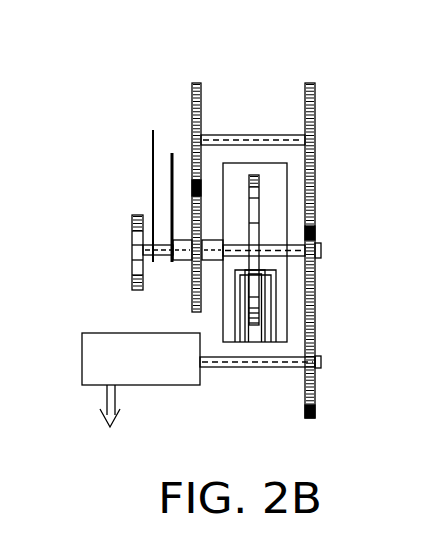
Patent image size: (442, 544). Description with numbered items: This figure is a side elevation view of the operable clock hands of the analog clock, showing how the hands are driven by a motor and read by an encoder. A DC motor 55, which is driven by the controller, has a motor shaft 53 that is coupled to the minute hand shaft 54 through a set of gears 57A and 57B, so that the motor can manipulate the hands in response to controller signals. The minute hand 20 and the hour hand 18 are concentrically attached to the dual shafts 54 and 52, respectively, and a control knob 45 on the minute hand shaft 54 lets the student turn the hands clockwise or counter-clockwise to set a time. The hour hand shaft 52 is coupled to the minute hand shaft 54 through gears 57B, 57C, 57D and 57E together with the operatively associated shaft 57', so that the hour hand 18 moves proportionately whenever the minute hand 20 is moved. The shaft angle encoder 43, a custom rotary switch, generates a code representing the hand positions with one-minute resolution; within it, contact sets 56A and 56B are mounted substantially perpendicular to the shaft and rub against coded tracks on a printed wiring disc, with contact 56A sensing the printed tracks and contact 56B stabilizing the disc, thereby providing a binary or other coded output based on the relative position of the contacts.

The hour hand 18 is at (172, 163).
The minute hand 20 is at (153, 155).
The encoder 43 is at (270, 163).
The control knob 45 is at (132, 250).
The hour hand shaft 52 is at (178, 263).
The motor shaft 53 is at (220, 368).
The minute hand shaft 54 is at (150, 257).
The DC motor 55 is at (82, 385).
The contact set 56A is at (277, 343).
The contact set 56B is at (243, 343).
The shaft 57' is at (253, 93).
The gear 57A is at (315, 383).
The gear 57B is at (315, 232).
The gear 57C is at (315, 117).
The gear 57D is at (201, 108).
The gear 57E is at (192, 208).